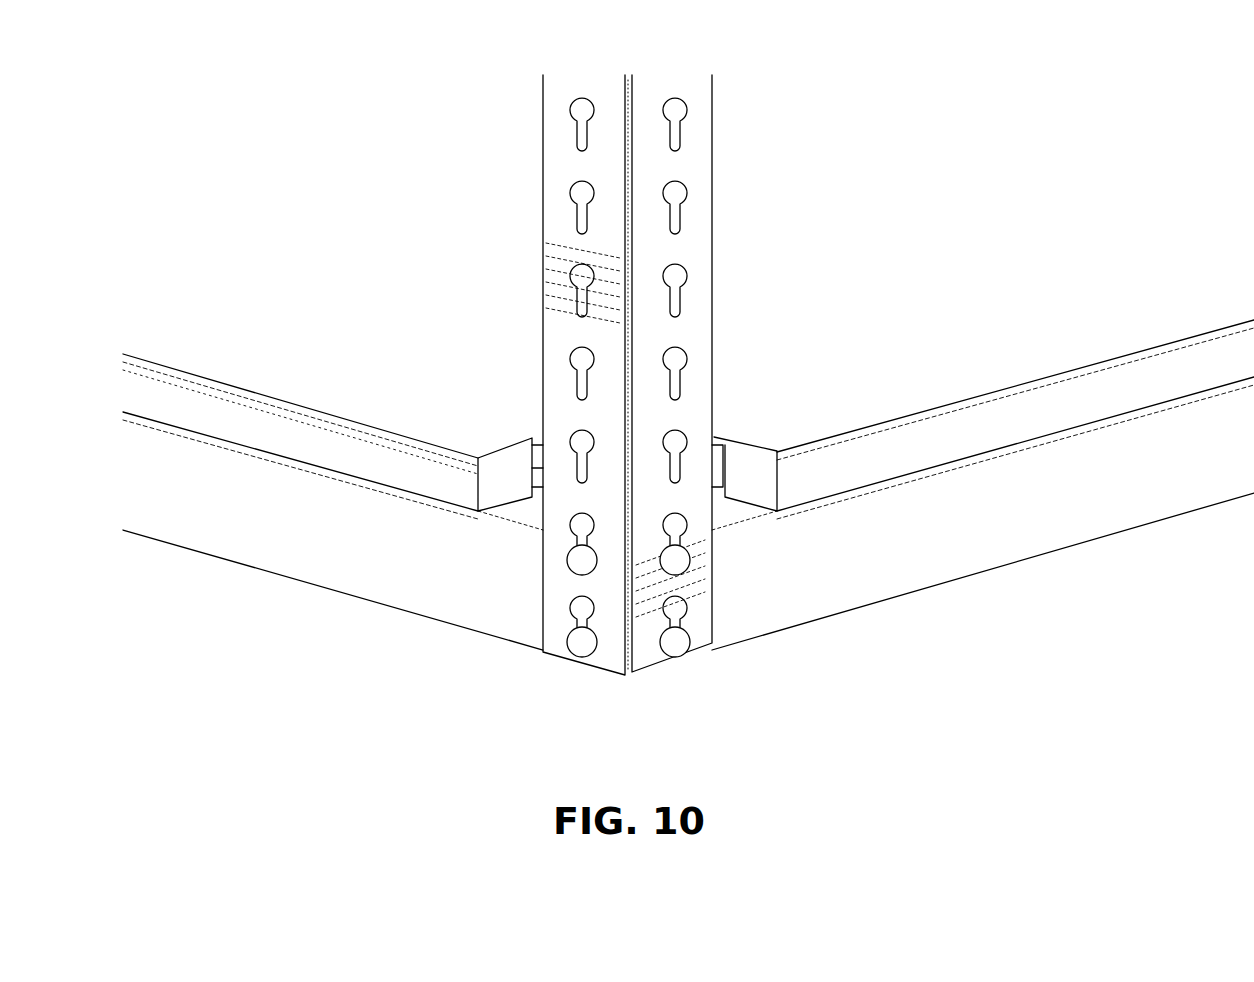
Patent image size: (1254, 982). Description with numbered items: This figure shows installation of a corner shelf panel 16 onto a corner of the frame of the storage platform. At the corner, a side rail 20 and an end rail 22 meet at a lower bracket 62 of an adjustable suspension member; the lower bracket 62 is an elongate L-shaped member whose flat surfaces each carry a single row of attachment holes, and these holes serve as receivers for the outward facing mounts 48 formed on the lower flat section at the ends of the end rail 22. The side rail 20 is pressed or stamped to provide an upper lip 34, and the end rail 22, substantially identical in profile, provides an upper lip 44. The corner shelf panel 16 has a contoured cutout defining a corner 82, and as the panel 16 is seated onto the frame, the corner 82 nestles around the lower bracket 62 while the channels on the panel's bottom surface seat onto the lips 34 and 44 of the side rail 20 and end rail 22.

The corner shelf panel 16 is at (296, 330).
The side rail 20 is at (265, 515).
The end rail 22 is at (1068, 497).
The upper lip 34 is at (535, 468).
The upper lip 44 is at (720, 463).
The outward facing mount 48 is at (683, 560).
The lower bracket 62 is at (694, 258).
The corner 82 is at (515, 428).